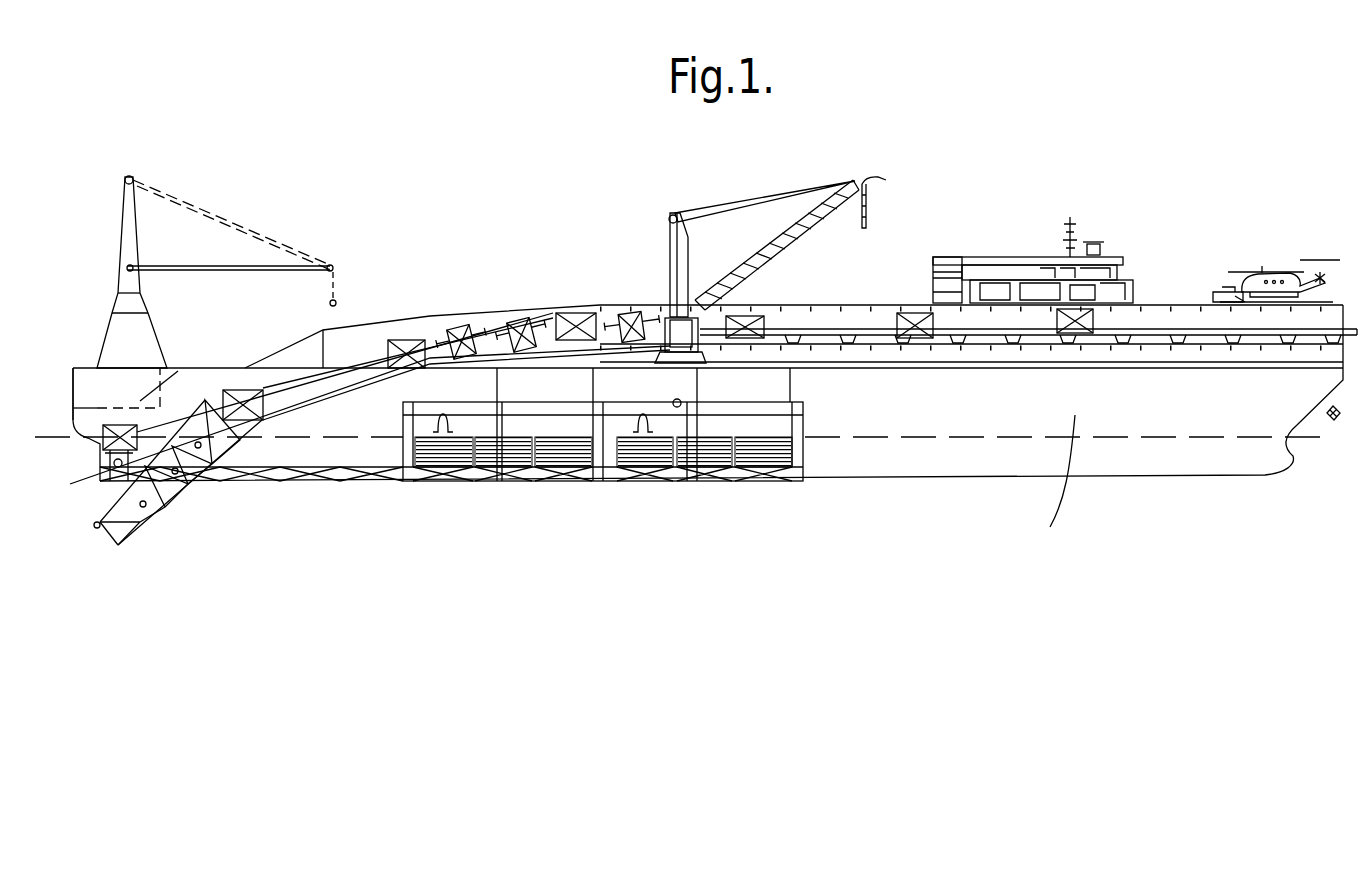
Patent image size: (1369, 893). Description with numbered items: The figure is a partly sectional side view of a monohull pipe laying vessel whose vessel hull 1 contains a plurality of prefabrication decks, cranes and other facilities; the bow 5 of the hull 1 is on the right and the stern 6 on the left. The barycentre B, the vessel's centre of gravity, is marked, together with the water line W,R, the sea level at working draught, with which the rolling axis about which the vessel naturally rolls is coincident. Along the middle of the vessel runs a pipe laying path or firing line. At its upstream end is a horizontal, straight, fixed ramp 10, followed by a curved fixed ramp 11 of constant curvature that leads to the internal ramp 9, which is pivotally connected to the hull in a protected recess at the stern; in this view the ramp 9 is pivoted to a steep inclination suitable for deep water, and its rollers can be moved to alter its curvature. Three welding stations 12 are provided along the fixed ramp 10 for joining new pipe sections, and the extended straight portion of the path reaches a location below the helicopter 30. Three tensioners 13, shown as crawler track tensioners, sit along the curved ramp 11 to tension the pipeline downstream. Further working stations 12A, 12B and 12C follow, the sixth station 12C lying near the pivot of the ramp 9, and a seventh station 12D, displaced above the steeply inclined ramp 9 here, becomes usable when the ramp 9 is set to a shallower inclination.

The vessel hull 1 is at (708, 361).
The bow 5 is at (1338, 421).
The stern 6 is at (72, 401).
The internal ramp 9 is at (170, 500).
The fixed ramp 10 is at (878, 330).
The curved ramp 11 is at (552, 312).
The welding station 12 is at (748, 307).
The working station 12A is at (572, 311).
The working station 12B is at (408, 340).
The working station 12C is at (240, 390).
The welding station 12D is at (117, 425).
The tensioner 13 is at (452, 330).
The helicopter 30 is at (1275, 271).
The barycentre B is at (679, 408).
The water line and rolling axis W,R is at (1313, 434).